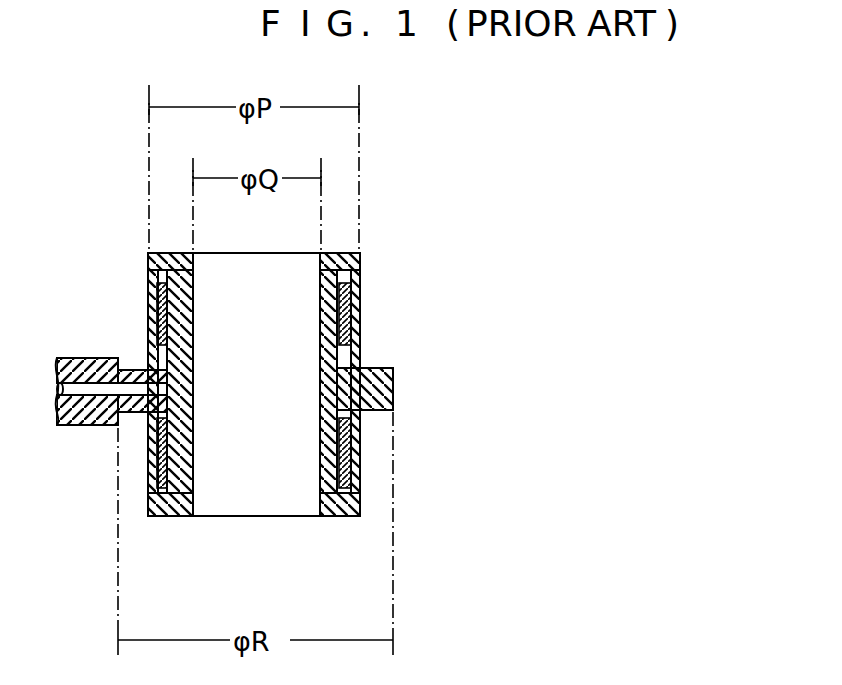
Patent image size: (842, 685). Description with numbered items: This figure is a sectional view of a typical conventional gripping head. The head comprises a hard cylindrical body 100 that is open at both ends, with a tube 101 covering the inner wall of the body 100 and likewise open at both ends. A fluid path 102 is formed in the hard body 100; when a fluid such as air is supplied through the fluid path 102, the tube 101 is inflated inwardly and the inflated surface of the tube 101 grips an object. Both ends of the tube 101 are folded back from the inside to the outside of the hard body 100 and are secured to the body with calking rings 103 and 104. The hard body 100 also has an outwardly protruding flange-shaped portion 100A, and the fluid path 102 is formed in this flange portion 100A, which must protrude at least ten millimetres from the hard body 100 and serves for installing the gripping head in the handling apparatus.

The hard cylindrical body 100 is at (362, 280).
The flange-shaped portion 100A is at (393, 372).
The tube 101 is at (320, 303).
The fluid path 102 is at (138, 392).
The calking ring 103 is at (360, 305).
The calking ring 104 is at (355, 467).